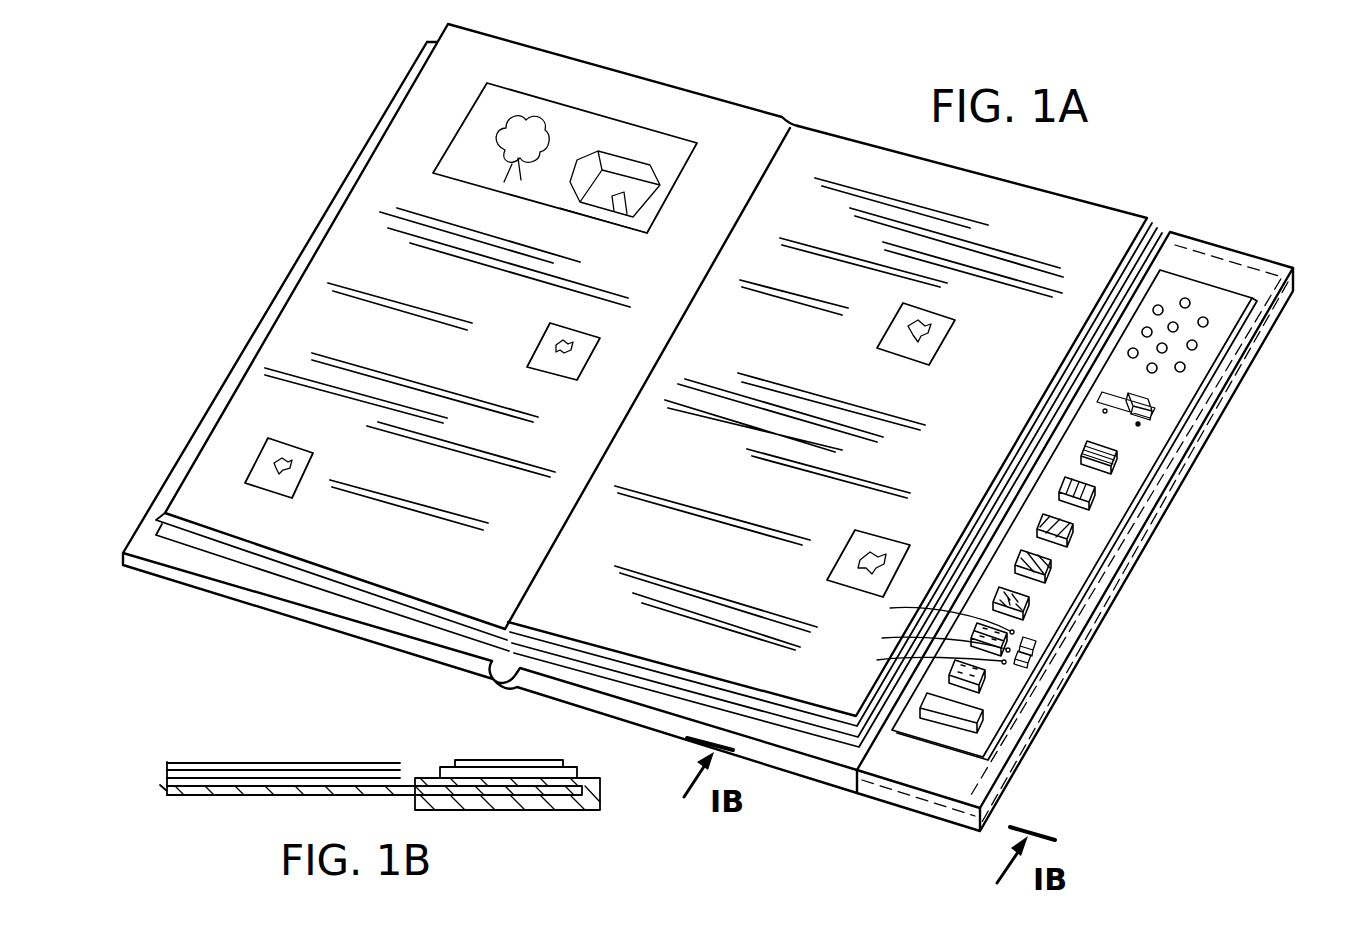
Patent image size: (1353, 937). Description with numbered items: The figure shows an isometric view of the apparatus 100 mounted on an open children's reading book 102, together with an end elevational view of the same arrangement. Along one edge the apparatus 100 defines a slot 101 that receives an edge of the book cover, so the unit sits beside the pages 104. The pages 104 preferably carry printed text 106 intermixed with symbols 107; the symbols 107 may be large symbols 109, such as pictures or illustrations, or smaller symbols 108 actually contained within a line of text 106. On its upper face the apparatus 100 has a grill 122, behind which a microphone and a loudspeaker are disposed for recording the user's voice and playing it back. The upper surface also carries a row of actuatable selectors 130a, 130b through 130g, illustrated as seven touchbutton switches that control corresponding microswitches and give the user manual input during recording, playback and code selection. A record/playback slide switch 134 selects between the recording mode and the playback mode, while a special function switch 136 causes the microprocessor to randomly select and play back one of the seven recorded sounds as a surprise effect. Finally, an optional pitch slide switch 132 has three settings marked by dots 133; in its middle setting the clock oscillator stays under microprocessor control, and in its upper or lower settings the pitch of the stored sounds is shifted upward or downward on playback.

In FIG. 1A, the apparatus 100 is at (1234, 236).
In FIG. 1B, the apparatus 100 is at (556, 817).
In FIG. 1B, the slot 101 is at (437, 813).
In FIG. 1A, the children's reading book 102 is at (679, 86).
In FIG. 1B, the children's reading book 102 is at (165, 785).
In FIG. 1A, the pages 104 is at (860, 160).
In FIG. 1B, the pages 104 is at (360, 763).
In FIG. 1A, the text 106 is at (347, 280).
In FIG. 1A, the symbols 107 is at (607, 235).
In FIG. 1A, the smaller symbols 108 is at (547, 357).
In FIG. 1A, the large symbols 109 is at (463, 122).
In FIG. 1A, the grill 122 is at (1210, 322).
In FIG. 1A, the actuatable selector 130a is at (1120, 462).
In FIG. 1A, the actuatable selector 130b is at (1098, 492).
In FIG. 1A, the actuatable selector 130g is at (985, 683).
In FIG. 1A, the pitch slide switch 132 is at (1013, 660).
In FIG. 1A, the dots 133 is at (1030, 630).
In FIG. 1A, the record/playback slide switch 134 is at (1162, 410).
In FIG. 1A, the special function switch 136 is at (980, 718).
In FIG. 1B, the special function switch 136 is at (502, 760).